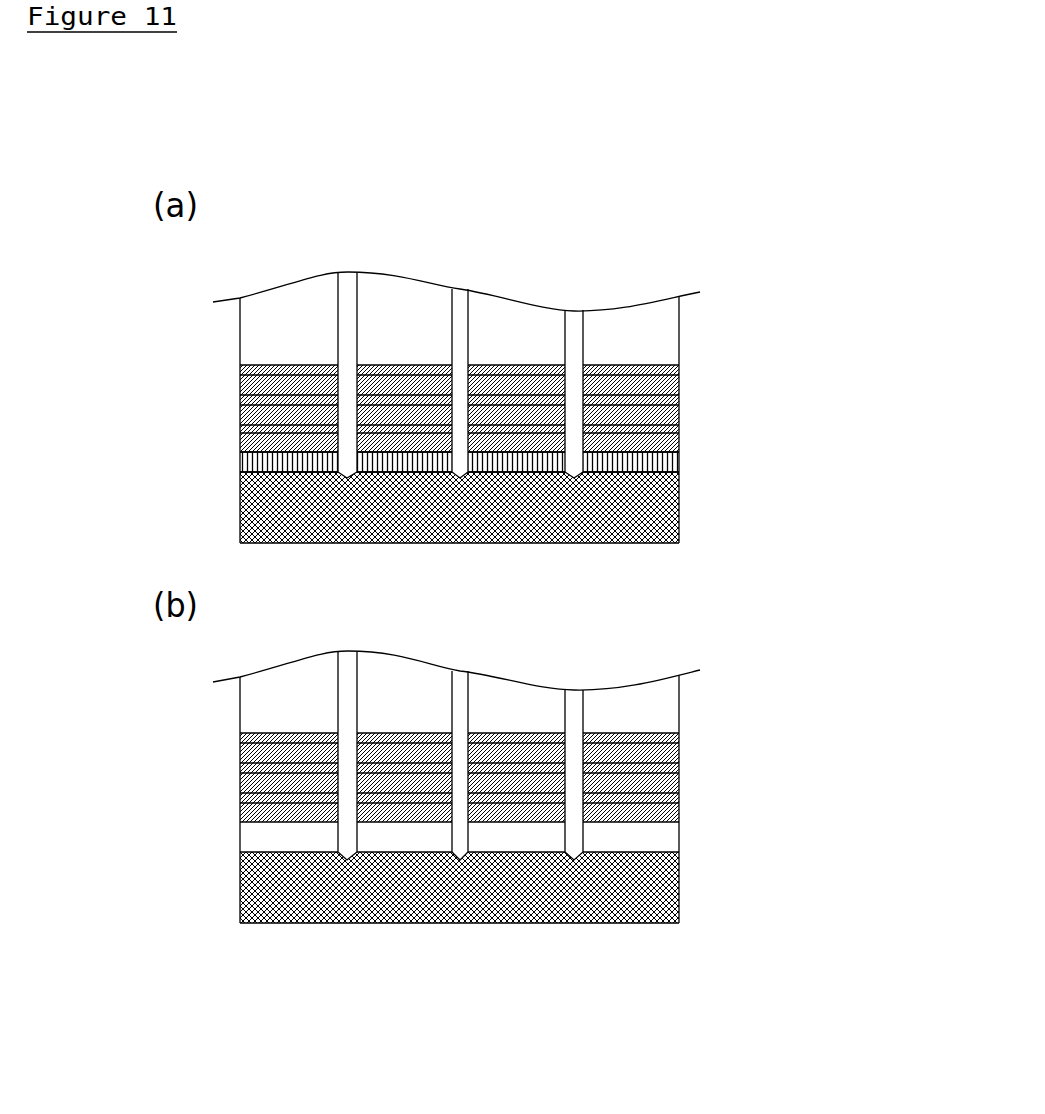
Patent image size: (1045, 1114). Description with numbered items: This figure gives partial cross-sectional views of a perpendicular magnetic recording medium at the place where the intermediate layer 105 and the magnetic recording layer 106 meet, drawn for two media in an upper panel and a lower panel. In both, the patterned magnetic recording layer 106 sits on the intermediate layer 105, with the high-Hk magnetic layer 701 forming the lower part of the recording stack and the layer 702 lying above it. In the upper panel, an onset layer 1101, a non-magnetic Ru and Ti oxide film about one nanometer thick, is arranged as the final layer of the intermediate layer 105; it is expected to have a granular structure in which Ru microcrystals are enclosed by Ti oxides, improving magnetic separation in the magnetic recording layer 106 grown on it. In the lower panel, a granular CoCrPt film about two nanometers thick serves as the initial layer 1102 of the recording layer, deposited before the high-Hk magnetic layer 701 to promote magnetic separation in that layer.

The intermediate layer 105 is at (821, 452).
The magnetic recording layer 106 is at (821, 452).
The high-Hk magnetic layer 701 is at (696, 362).
The upper layer 702 is at (696, 283).
The onset layer 1101 is at (680, 461).
The initial layer of the recording layer 1102 is at (643, 838).